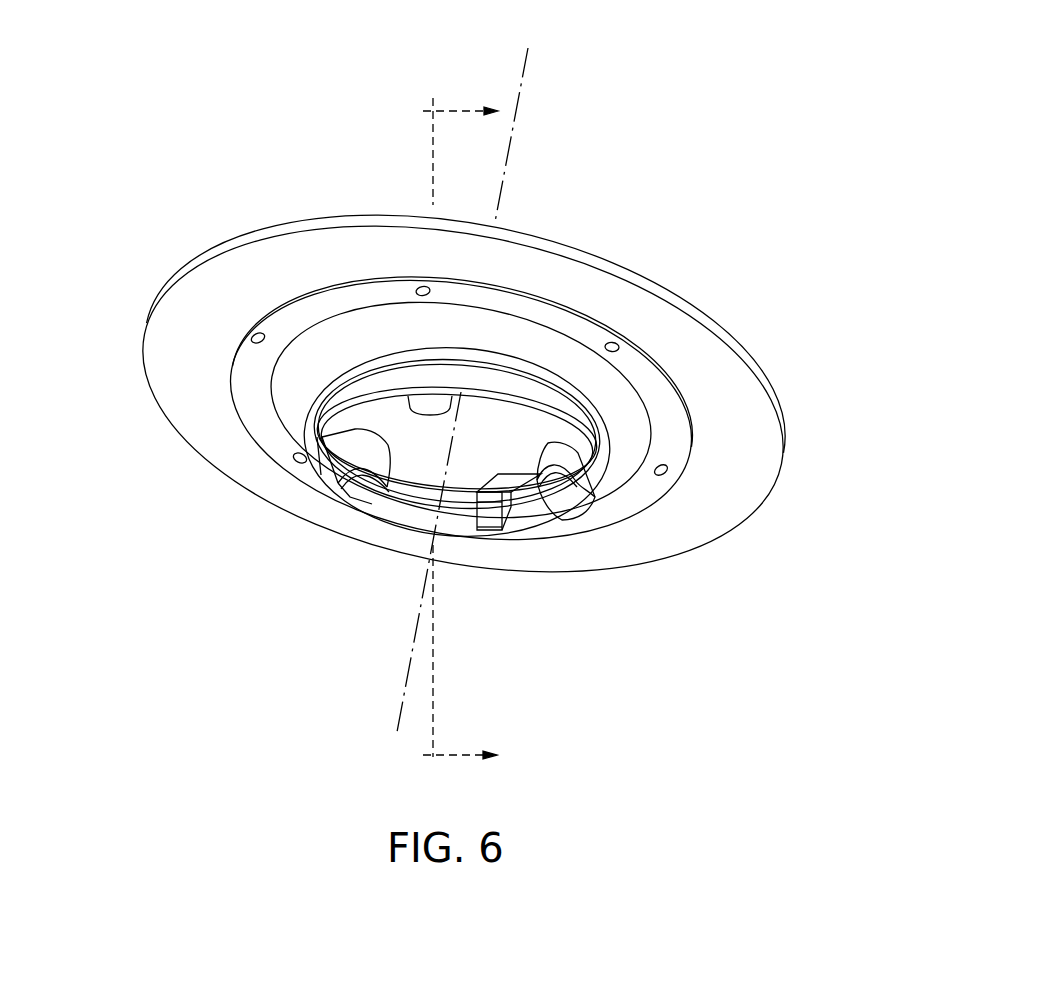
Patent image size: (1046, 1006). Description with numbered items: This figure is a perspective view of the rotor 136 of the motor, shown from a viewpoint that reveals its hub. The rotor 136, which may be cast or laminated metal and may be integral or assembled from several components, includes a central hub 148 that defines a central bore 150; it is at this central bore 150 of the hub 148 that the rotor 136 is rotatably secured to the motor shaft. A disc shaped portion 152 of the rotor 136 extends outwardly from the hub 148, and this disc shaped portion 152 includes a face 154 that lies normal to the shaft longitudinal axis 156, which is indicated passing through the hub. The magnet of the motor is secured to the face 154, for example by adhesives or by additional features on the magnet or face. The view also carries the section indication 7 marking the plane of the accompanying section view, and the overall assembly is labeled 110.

The mounting assembly 110 is at (607, 70).
The rotor 136 is at (643, 143).
The central hub 148 is at (570, 438).
The central bore 150 is at (438, 458).
The disc shaped portion 152 is at (141, 343).
The face 154 is at (713, 364).
The shaft longitudinal axis 156 is at (520, 87).
The section line 7- 7 is at (456, 435).